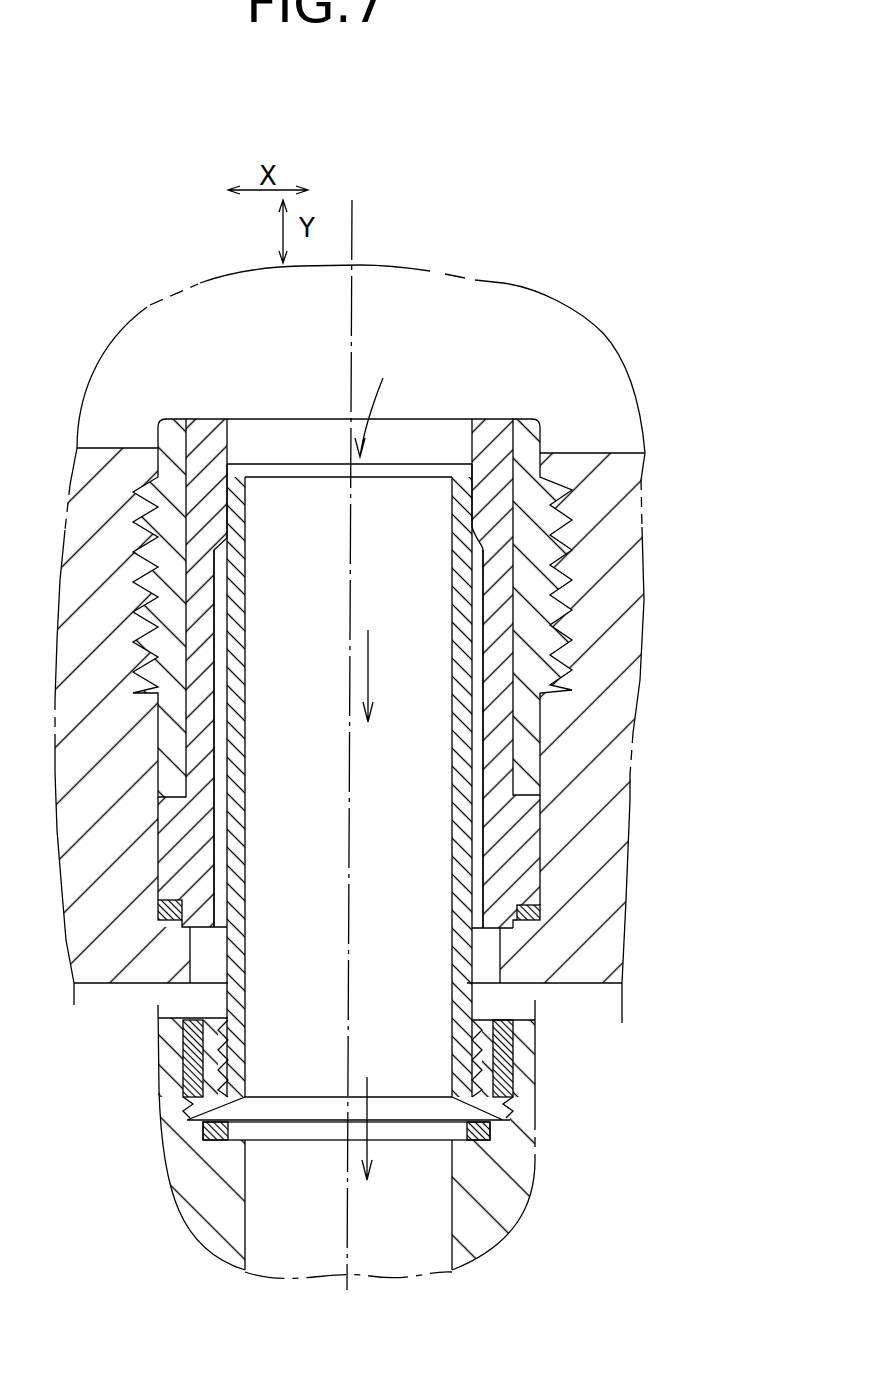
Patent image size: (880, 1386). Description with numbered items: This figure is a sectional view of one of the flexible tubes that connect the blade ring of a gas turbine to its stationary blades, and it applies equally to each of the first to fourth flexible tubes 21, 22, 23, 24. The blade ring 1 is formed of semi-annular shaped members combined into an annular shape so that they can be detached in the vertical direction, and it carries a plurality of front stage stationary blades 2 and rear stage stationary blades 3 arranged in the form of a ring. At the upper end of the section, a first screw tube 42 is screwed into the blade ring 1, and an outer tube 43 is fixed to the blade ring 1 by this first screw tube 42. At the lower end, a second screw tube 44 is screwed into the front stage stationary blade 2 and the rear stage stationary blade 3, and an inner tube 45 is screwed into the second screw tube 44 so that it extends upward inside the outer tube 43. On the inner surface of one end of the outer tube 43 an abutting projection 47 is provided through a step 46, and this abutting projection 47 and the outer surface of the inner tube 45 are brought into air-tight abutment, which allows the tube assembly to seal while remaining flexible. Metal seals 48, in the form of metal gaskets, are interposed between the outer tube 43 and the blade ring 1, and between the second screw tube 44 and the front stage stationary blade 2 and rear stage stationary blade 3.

The blade ring 1 is at (642, 527).
The front stage stationary blade 2 is at (383, 1154).
The rear stage stationary blade 3 is at (495, 1226).
The first flexible tube 21 is at (438, 311).
The second flexible tube 22 is at (438, 311).
The third flexible tube 23 is at (438, 311).
The fourth flexible tube 24 is at (494, 385).
The first screw tube 42 is at (557, 616).
The outer tube 43 is at (532, 830).
The second screw tube 44 is at (495, 1067).
The inner tube 45 is at (472, 867).
The step 46 is at (238, 466).
The abutting projection 47 is at (210, 530).
The metal seal 48 is at (157, 913).